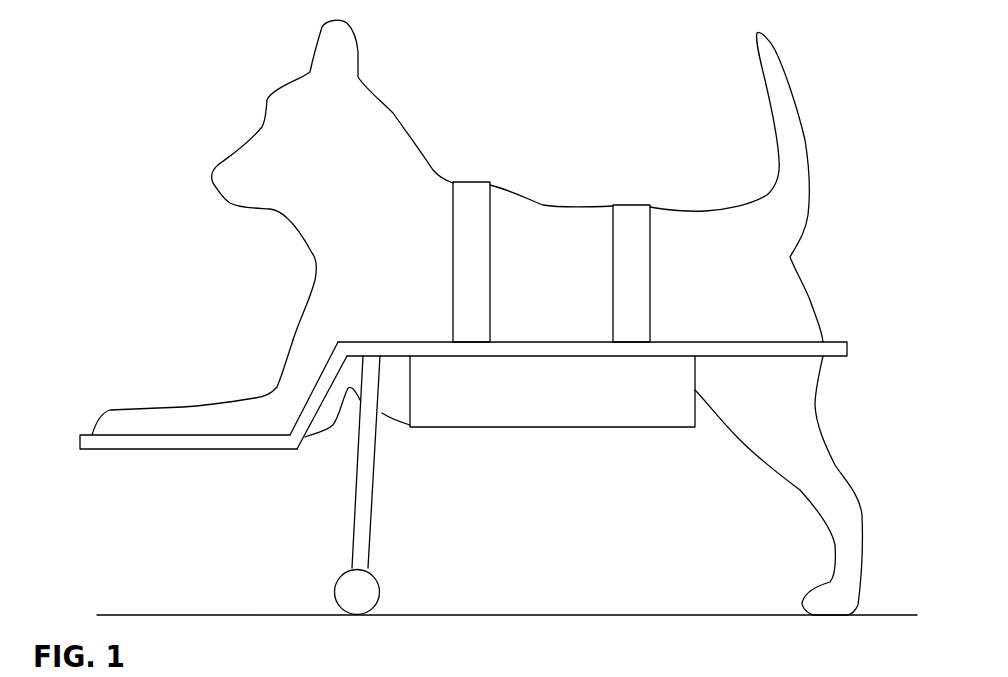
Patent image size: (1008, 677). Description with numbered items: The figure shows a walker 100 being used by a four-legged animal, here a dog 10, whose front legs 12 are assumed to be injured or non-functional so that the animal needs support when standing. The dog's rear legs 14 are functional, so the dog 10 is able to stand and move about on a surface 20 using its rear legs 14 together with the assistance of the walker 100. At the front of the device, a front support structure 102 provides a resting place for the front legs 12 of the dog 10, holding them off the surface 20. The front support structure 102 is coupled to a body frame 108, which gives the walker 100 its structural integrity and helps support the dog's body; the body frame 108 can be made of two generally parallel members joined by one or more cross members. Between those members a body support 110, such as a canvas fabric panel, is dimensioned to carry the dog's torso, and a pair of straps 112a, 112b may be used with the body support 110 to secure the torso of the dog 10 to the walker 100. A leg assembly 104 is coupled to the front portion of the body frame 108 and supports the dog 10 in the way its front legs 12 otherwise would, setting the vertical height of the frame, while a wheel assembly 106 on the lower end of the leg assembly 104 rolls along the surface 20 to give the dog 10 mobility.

The dog 10 is at (283, 82).
The front legs 12 is at (183, 403).
The rear legs 14 is at (832, 447).
The surface 20 is at (570, 613).
The walker 100 is at (333, 327).
The front support structure 102 is at (285, 455).
The leg assembly 104 is at (365, 473).
The wheel assembly 106 is at (368, 590).
The body frame 108 is at (575, 348).
The body support 110 is at (503, 402).
The strap 112a is at (472, 195).
The strap 112b is at (630, 215).